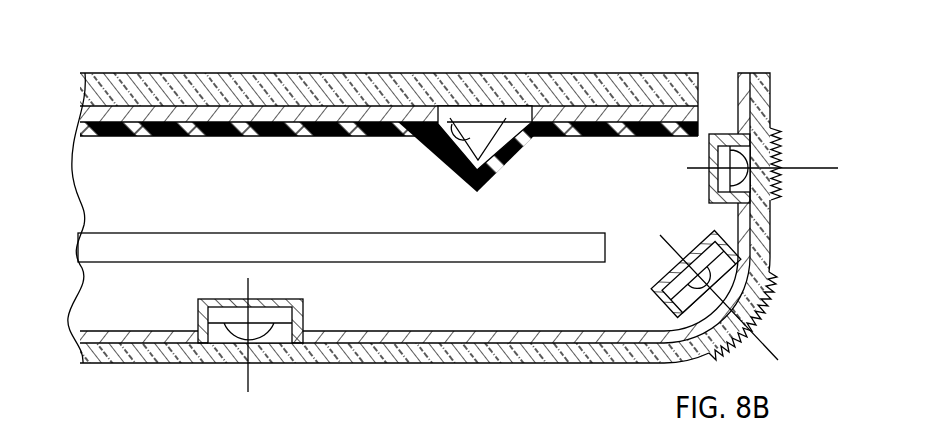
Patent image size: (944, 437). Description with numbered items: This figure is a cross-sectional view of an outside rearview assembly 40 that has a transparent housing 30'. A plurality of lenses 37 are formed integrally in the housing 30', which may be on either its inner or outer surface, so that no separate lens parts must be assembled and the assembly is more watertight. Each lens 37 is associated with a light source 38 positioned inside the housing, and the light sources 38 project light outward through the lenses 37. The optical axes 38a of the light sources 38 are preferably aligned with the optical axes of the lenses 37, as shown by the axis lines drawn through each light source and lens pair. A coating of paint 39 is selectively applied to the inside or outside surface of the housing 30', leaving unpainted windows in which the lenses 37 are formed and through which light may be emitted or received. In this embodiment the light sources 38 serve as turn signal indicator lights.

The layered connector half 40 is at (302, 73).
The coating of paint 39 is at (740, 104).
The transparent housing 30' is at (452, 203).
The lenses 37 is at (780, 140).
The light sources 38 is at (440, 150).
The optical axes 38a is at (252, 380).